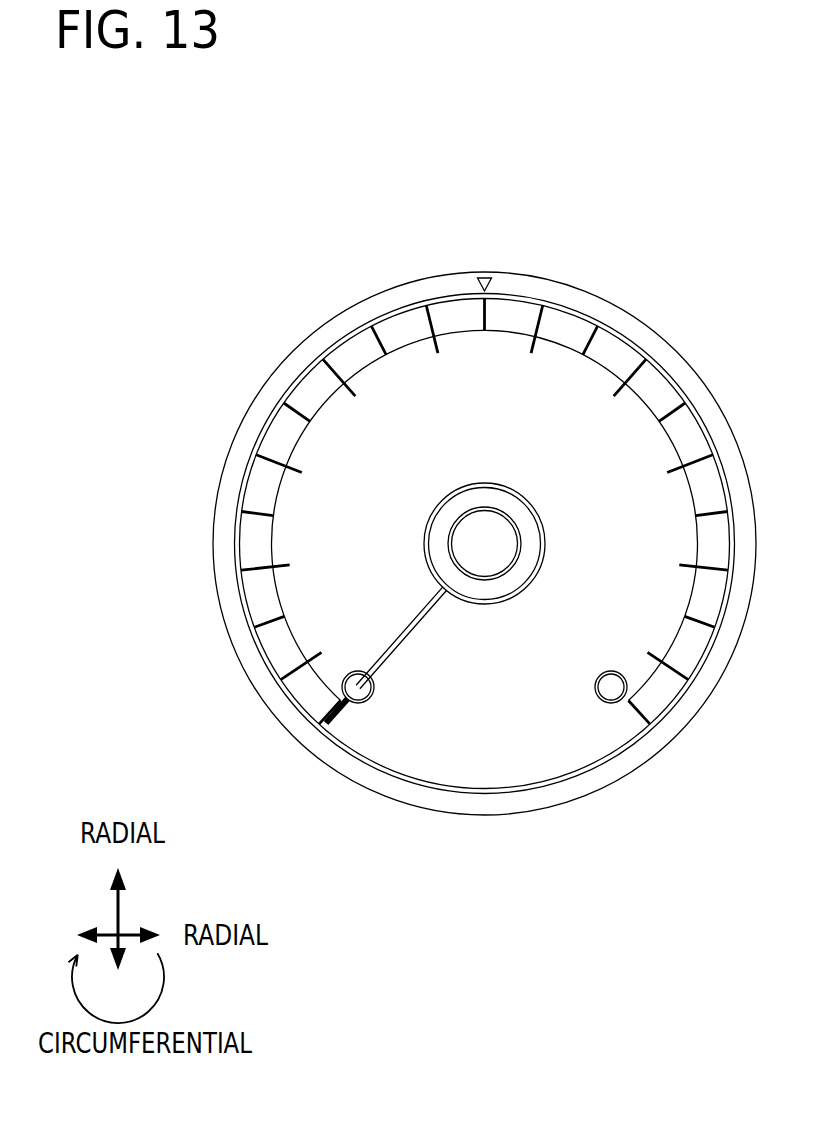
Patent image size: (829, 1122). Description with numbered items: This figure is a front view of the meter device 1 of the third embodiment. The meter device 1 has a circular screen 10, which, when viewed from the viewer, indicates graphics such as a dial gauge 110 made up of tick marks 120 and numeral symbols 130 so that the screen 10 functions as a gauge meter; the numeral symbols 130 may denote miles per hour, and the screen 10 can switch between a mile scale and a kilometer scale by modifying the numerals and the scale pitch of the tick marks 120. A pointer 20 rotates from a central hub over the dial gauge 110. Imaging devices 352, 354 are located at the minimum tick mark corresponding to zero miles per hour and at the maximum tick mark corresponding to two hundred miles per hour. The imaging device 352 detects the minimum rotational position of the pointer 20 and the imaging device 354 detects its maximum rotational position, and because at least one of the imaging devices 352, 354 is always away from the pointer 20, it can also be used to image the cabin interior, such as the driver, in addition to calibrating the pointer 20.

The meter device 1 is at (705, 292).
The screen 10 is at (587, 737).
The pointer 20 is at (495, 465).
The dial gauge 110 is at (277, 377).
The tick marks 120 is at (262, 504).
The numeral symbols 130 is at (288, 588).
The imaging device 352 is at (358, 703).
The imaging device 354 is at (618, 703).